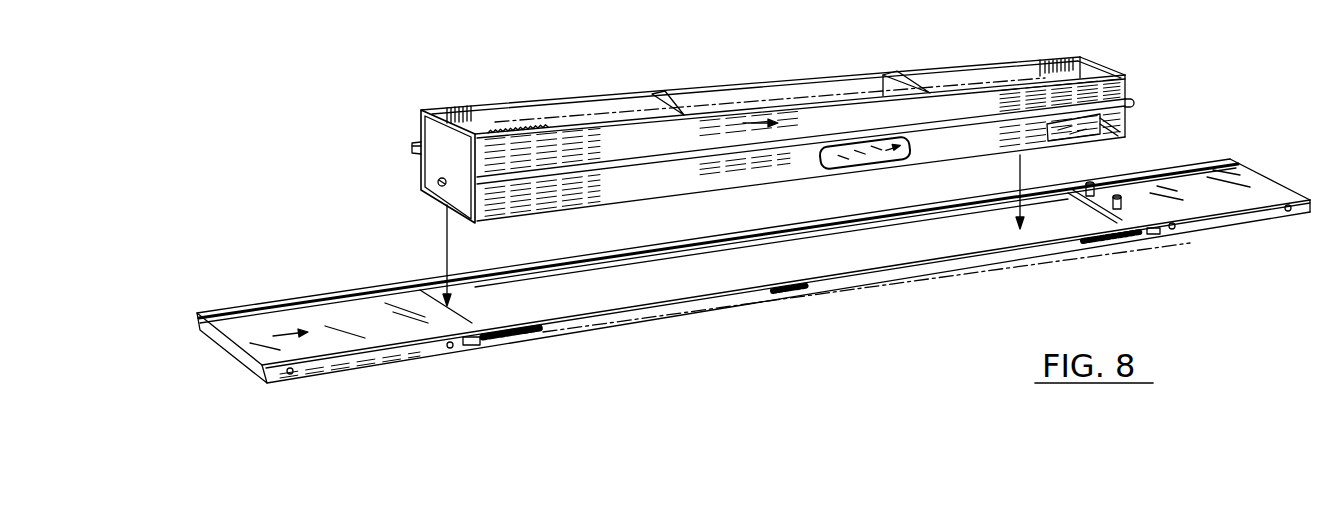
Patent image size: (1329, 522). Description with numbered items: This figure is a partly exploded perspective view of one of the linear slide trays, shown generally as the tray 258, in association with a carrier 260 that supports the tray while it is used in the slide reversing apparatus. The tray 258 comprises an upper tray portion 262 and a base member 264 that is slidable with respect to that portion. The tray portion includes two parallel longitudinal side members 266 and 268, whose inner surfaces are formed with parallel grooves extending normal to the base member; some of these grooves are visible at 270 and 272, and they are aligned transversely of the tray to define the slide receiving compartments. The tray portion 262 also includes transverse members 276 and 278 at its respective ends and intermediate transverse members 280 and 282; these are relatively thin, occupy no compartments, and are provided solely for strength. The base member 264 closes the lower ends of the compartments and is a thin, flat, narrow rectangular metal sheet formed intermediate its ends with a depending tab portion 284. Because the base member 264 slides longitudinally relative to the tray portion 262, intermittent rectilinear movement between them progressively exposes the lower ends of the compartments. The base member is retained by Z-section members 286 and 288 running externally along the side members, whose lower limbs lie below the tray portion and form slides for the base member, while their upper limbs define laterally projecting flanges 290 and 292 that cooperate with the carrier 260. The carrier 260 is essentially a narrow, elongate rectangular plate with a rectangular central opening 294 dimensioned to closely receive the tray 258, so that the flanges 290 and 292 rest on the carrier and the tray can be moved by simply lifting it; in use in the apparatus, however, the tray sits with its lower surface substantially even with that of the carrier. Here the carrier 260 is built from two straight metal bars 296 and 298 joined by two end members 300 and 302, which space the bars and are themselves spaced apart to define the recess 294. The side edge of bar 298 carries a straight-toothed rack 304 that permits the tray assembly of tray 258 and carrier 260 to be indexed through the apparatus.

The tray 258 is at (1263, 130).
The carrier 260 is at (1203, 150).
The upper tray portion 262 is at (1099, 51).
The base member 264 is at (1082, 134).
The longitudinal side member 266 is at (777, 82).
The longitudinal side member 268 is at (833, 118).
The grooves 270 is at (453, 108).
The grooves 272 is at (513, 128).
The transverse member 276 is at (428, 173).
The transverse member 278 is at (1127, 86).
The intermediate transverse member 280 is at (660, 96).
The intermediate transverse member 282 is at (914, 80).
The depending tab portion 284 is at (887, 164).
The Z-section member 286 is at (414, 163).
The Z-section member 288 is at (643, 186).
The laterally projecting flange 290 is at (413, 141).
The laterally projecting flange 292 is at (597, 174).
The central opening 294 is at (460, 322).
The metal bar 296 is at (832, 222).
The metal bar 298 is at (720, 293).
The end member 300 is at (358, 310).
The end member 302 is at (1207, 197).
The straight-toothed rack 304 is at (497, 352).